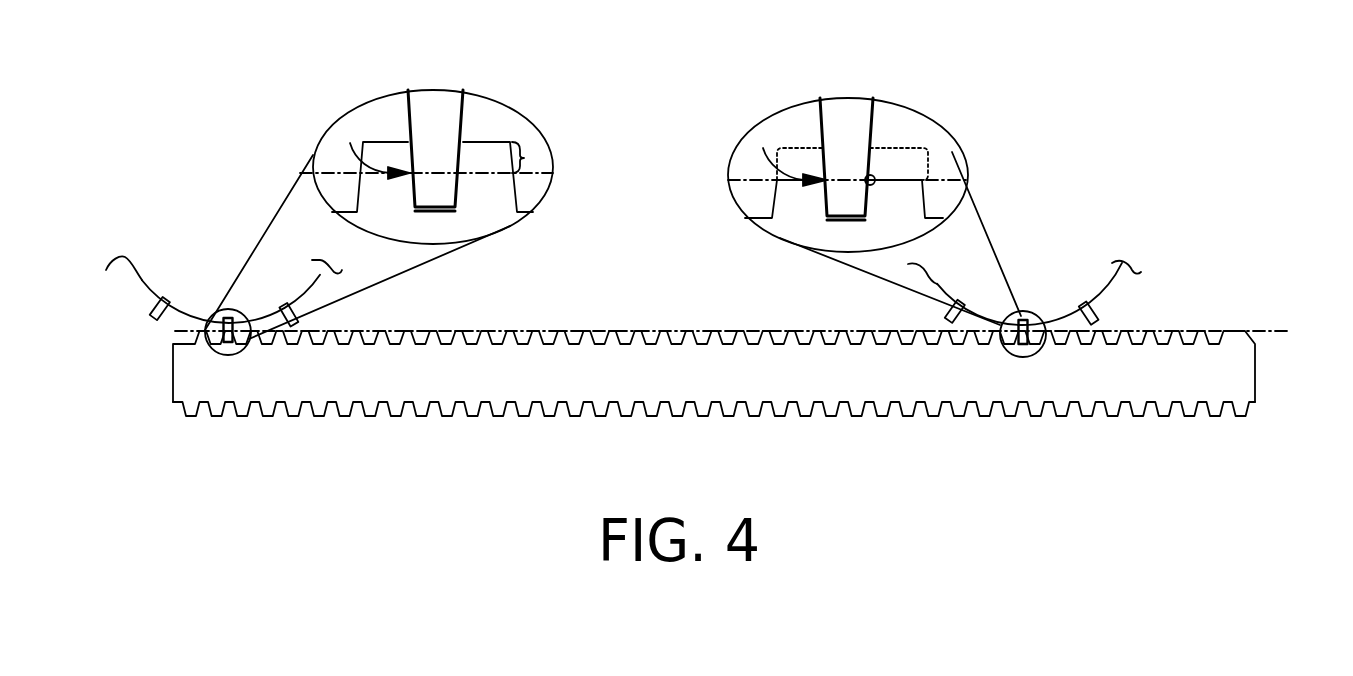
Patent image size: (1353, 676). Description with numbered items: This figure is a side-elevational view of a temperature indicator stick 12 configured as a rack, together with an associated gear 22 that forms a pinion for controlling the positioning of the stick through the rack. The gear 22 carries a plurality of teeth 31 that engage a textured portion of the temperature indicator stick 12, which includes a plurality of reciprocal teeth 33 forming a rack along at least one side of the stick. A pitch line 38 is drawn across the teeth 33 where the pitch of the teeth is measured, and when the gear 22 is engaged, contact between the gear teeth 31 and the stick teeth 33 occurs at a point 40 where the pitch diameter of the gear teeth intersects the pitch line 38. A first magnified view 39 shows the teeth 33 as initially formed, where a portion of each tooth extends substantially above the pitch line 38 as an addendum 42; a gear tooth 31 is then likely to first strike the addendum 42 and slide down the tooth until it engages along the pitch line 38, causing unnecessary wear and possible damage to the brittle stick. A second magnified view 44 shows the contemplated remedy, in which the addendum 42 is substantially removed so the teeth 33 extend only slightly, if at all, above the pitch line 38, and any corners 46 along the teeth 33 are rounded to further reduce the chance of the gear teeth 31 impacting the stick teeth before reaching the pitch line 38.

The temperature indicator stick 12 is at (703, 384).
The gear 22 is at (138, 283).
The teeth 31 is at (433, 103).
The reciprocal teeth 33 is at (212, 418).
The pitch line 38 is at (540, 177).
The first magnified view 39 is at (477, 92).
The point 40 is at (580, 151).
The addendum 42 is at (524, 158).
The second magnified view 44 is at (878, 100).
The corners 46 is at (871, 185).